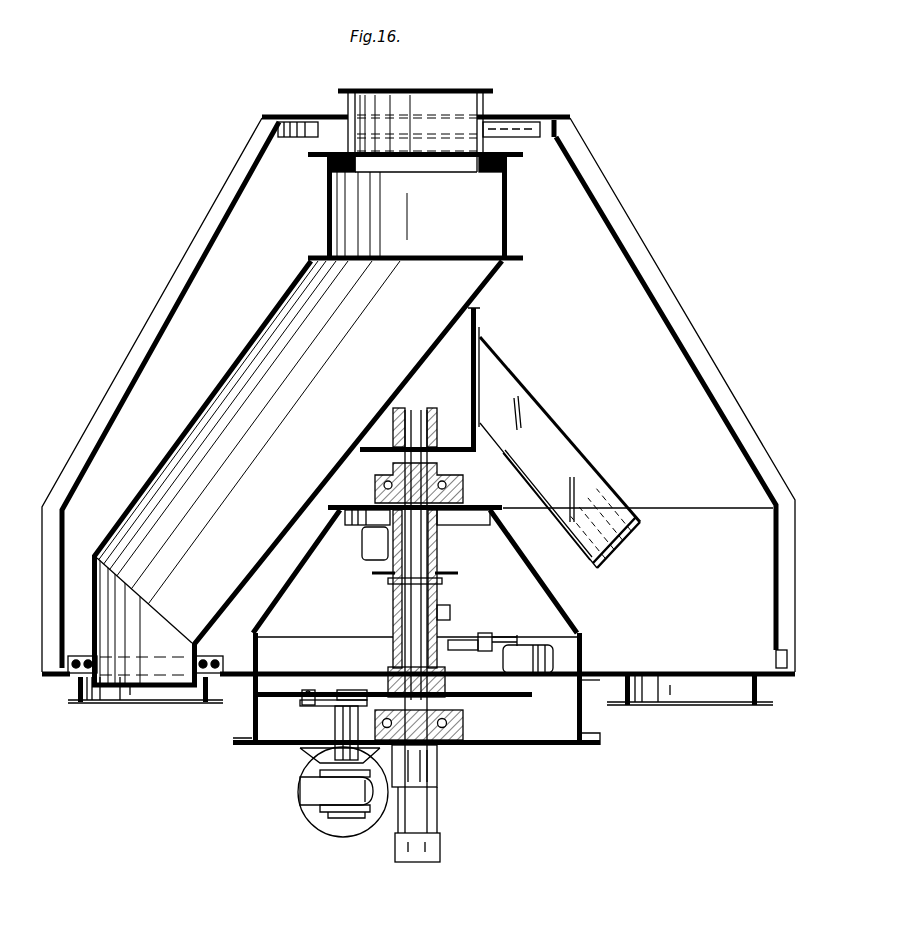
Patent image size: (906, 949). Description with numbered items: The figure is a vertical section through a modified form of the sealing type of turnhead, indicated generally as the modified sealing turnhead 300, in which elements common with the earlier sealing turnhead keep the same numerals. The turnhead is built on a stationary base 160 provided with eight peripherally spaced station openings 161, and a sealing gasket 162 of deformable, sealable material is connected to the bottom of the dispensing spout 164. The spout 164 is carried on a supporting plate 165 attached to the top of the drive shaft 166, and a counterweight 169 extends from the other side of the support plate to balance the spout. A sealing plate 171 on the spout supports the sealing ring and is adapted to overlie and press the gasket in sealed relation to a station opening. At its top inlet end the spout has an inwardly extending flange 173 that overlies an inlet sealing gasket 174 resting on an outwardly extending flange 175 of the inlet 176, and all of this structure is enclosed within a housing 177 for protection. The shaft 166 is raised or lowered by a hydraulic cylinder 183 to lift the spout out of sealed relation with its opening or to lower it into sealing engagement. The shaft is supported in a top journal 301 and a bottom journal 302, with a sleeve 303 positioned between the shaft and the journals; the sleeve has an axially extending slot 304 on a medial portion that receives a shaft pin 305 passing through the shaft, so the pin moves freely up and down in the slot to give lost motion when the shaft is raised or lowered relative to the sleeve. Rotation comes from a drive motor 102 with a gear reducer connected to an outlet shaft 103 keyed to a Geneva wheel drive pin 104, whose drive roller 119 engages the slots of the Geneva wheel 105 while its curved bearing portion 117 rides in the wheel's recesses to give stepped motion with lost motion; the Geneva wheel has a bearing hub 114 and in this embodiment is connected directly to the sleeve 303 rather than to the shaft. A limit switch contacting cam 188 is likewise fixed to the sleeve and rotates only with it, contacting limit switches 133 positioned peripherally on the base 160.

The drive motor 102 is at (310, 797).
The outlet shaft 103 is at (338, 758).
The Geneva wheel drive pin 104 is at (313, 717).
The Geneva wheel 105 is at (520, 704).
The bearing hub 114 is at (393, 666).
The curved bearing portion 117 is at (348, 690).
The drive roller 119 is at (388, 665).
The limit switch 133 is at (560, 654).
The stationary base 160 is at (590, 687).
The station opening 161 is at (725, 673).
The sealing gasket 162 is at (68, 677).
The spout 164 is at (212, 397).
The supporting plate 165 is at (380, 455).
The drive shaft 166 is at (408, 428).
The counterweight 169 is at (570, 457).
The sealing plate 171 is at (207, 654).
The inwardly extending flange 173 is at (318, 153).
The inlet sealing gasket 174 is at (327, 170).
The outwardly extending flange 175 is at (488, 173).
The inlet 176 is at (440, 100).
The housing 177 is at (575, 152).
The hydraulic cylinder 183 is at (420, 765).
The limit switch contacting cam 188 is at (455, 642).
The modified sealing turnhead 300 is at (678, 243).
The top journal 301 is at (452, 484).
The bottom journal 302 is at (457, 723).
The sleeve 303 is at (437, 613).
The axially extending slot 304 is at (397, 566).
The shaft pin 305 is at (390, 582).